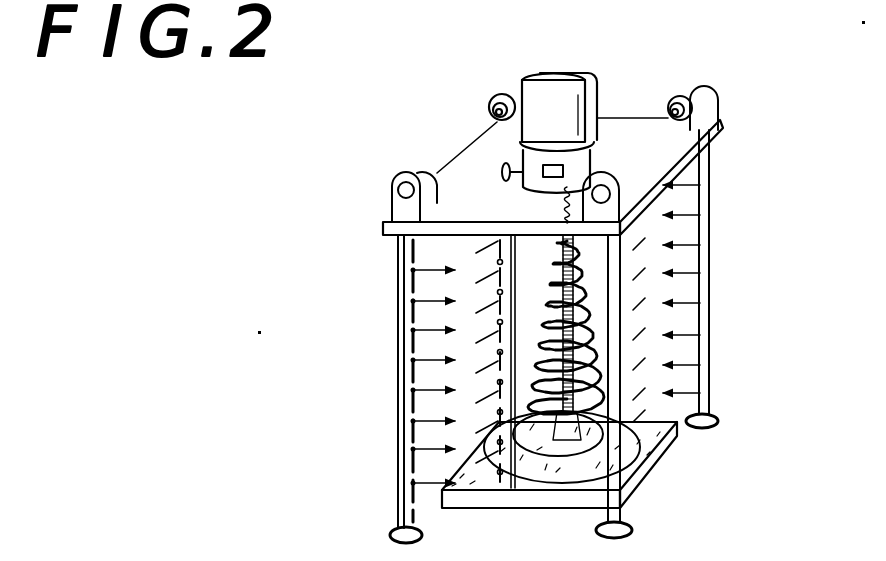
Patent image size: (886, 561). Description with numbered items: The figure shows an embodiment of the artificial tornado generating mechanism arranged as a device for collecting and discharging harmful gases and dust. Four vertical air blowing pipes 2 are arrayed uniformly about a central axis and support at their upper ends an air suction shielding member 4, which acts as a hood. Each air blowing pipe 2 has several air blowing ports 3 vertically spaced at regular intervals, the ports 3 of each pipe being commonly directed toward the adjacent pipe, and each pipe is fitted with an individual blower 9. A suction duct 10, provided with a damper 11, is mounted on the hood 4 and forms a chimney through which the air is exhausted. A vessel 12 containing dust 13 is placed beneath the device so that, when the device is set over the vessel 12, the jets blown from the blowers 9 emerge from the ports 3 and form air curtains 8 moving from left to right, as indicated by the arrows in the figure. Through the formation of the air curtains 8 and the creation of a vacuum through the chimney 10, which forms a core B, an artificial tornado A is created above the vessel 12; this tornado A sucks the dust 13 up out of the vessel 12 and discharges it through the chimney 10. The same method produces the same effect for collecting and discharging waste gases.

The air blowing pipe 2 is at (400, 315).
The air blowing port 3 is at (411, 448).
The air suction shielding member 4 is at (713, 157).
The air curtain 8 is at (437, 484).
The blower 9 is at (392, 184).
The suction duct 10 is at (597, 100).
The damper 11 is at (527, 160).
The vessel 12 is at (650, 467).
The dust 13 is at (676, 426).
The artificial tornado A is at (508, 488).
The core B is at (576, 488).